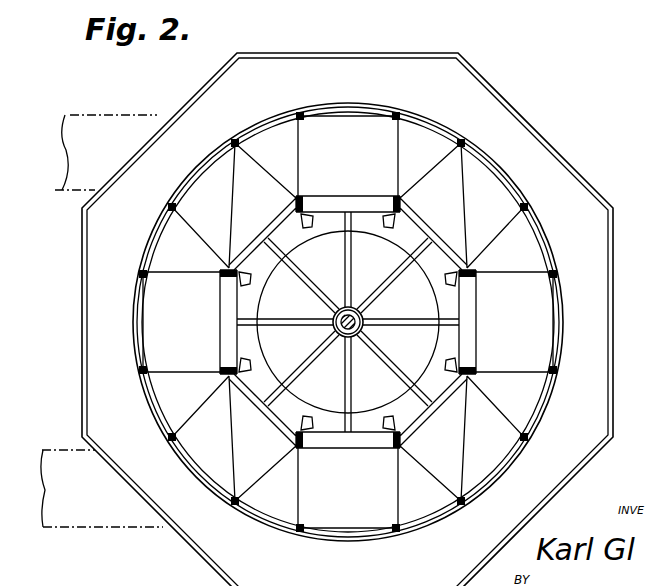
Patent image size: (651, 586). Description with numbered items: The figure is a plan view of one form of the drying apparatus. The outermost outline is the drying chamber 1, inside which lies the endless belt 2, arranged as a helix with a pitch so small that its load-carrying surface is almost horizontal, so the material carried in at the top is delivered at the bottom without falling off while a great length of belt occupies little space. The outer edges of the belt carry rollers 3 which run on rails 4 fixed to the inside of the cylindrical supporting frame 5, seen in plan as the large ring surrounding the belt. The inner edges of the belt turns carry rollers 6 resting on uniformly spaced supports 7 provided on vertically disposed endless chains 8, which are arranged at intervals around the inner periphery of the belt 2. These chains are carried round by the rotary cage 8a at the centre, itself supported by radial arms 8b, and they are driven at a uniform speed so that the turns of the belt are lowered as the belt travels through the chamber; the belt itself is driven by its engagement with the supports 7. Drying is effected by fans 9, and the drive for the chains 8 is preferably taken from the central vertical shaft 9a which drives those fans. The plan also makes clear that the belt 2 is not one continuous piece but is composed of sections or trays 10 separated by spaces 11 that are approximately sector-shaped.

The drying chamber 1 is at (80, 327).
The endless belt 2 is at (130, 130).
The rollers 3 is at (553, 270).
The rails 4 is at (160, 226).
The cylindrical supporting frame 5 is at (330, 103).
The rollers 6 is at (222, 269).
The supports 7 is at (315, 217).
The endless chains 8 is at (402, 210).
The rotary cage 8a is at (257, 298).
The radial arms 8b is at (363, 300).
The fans 9 is at (413, 353).
The central vertical shaft 9a is at (337, 327).
The sections or trays 10 is at (250, 197).
The spaces 11 is at (430, 128).